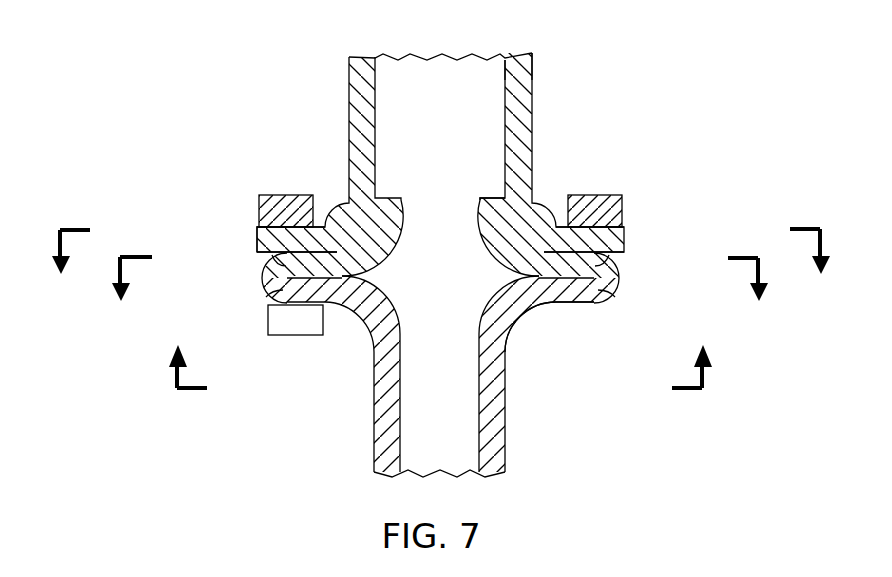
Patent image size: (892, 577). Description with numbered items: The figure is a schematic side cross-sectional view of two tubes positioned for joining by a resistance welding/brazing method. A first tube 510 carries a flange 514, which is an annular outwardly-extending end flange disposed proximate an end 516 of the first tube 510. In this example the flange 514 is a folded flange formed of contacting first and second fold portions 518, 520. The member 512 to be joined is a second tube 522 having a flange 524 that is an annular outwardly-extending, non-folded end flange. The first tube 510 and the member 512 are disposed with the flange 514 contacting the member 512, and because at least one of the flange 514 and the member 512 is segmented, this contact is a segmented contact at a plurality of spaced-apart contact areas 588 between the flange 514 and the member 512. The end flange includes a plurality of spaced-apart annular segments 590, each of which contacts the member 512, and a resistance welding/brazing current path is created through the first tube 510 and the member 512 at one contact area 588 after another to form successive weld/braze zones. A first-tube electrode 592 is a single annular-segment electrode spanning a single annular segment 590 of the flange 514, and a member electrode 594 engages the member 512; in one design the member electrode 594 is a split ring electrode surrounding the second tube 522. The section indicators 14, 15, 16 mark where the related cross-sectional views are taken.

The first tube 510 is at (445, 376).
The member 512 is at (454, 165).
The second tube 522 is at (576, 50).
The end of the first tube 516 is at (481, 197).
The member electrode 594 is at (298, 195).
The flange of the second tube 524 is at (257, 229).
The contact areas 588 is at (270, 266).
The annular segments 590 is at (262, 276).
The flange 514 is at (270, 293).
The second fold portion 520 is at (620, 278).
The first fold portion 518 is at (573, 305).
The first-tube electrode 592 is at (300, 337).
The section line 14 is at (439, 299).
The section line 15 is at (441, 273).
The section line 16 is at (439, 347).